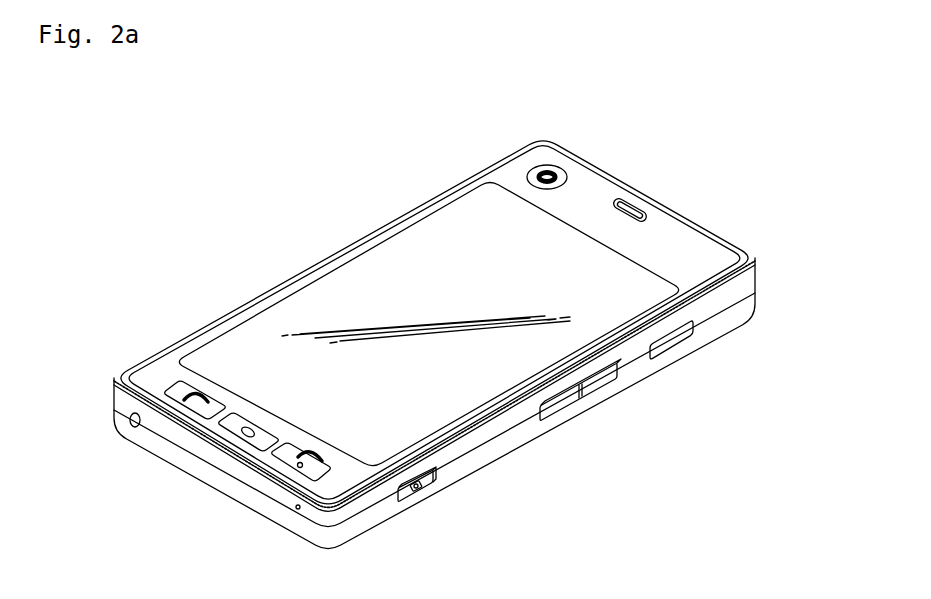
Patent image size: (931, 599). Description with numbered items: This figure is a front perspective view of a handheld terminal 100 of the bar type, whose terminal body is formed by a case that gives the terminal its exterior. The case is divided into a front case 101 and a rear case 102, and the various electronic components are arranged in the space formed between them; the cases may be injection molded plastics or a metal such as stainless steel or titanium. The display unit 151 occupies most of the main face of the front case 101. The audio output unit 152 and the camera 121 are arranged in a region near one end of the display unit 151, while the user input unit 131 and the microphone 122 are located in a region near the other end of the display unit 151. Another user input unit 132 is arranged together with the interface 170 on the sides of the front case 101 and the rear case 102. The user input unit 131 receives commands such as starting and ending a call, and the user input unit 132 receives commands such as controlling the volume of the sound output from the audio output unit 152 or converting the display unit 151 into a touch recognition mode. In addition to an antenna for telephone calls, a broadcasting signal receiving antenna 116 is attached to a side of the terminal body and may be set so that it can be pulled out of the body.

The handheld terminal 100 is at (402, 193).
The front case 101 is at (748, 280).
The rear case 102 is at (752, 305).
The display unit 151 is at (335, 282).
The camera 121 is at (549, 177).
The audio output unit 152 is at (634, 211).
The user input unit 131 is at (178, 394).
The user input unit 132 is at (560, 407).
The broadcasting signal receiving antenna 116 is at (128, 423).
The microphone 122 is at (296, 510).
The interface 170 is at (672, 343).